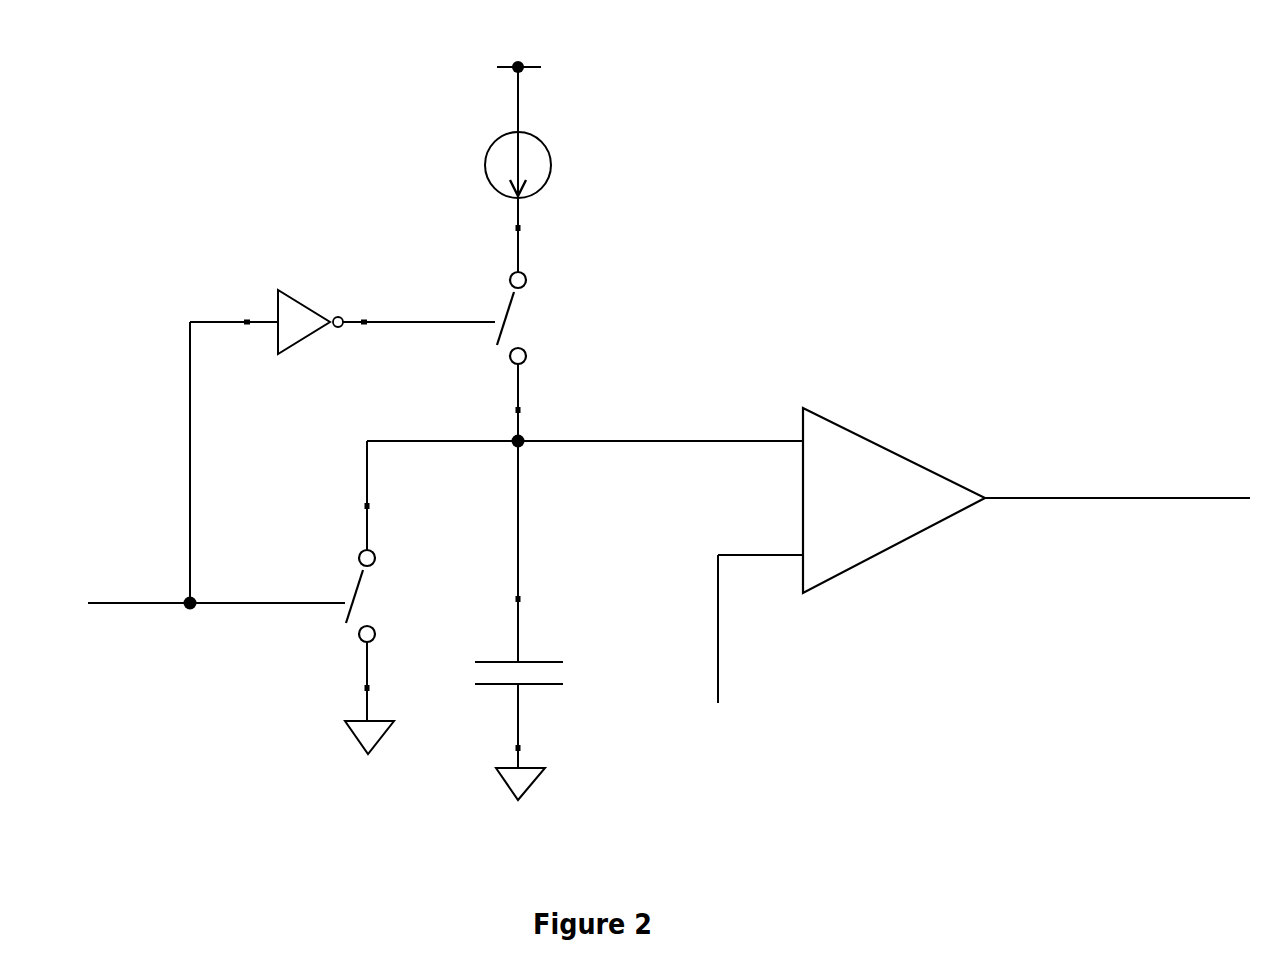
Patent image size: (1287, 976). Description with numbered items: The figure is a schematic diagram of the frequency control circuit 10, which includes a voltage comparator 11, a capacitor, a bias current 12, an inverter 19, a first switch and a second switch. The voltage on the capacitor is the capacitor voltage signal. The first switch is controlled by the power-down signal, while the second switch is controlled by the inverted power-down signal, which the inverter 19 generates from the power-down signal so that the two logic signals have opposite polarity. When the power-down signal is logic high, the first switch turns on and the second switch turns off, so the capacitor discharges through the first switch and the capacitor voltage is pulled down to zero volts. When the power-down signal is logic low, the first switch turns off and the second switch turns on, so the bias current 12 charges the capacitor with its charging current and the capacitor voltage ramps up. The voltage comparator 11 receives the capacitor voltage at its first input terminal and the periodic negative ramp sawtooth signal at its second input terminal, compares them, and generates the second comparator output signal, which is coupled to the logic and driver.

The frequency control circuit 10 is at (860, 210).
The voltage comparator 11 is at (902, 450).
The bias current 12 is at (483, 168).
The inverter 19 is at (262, 295).